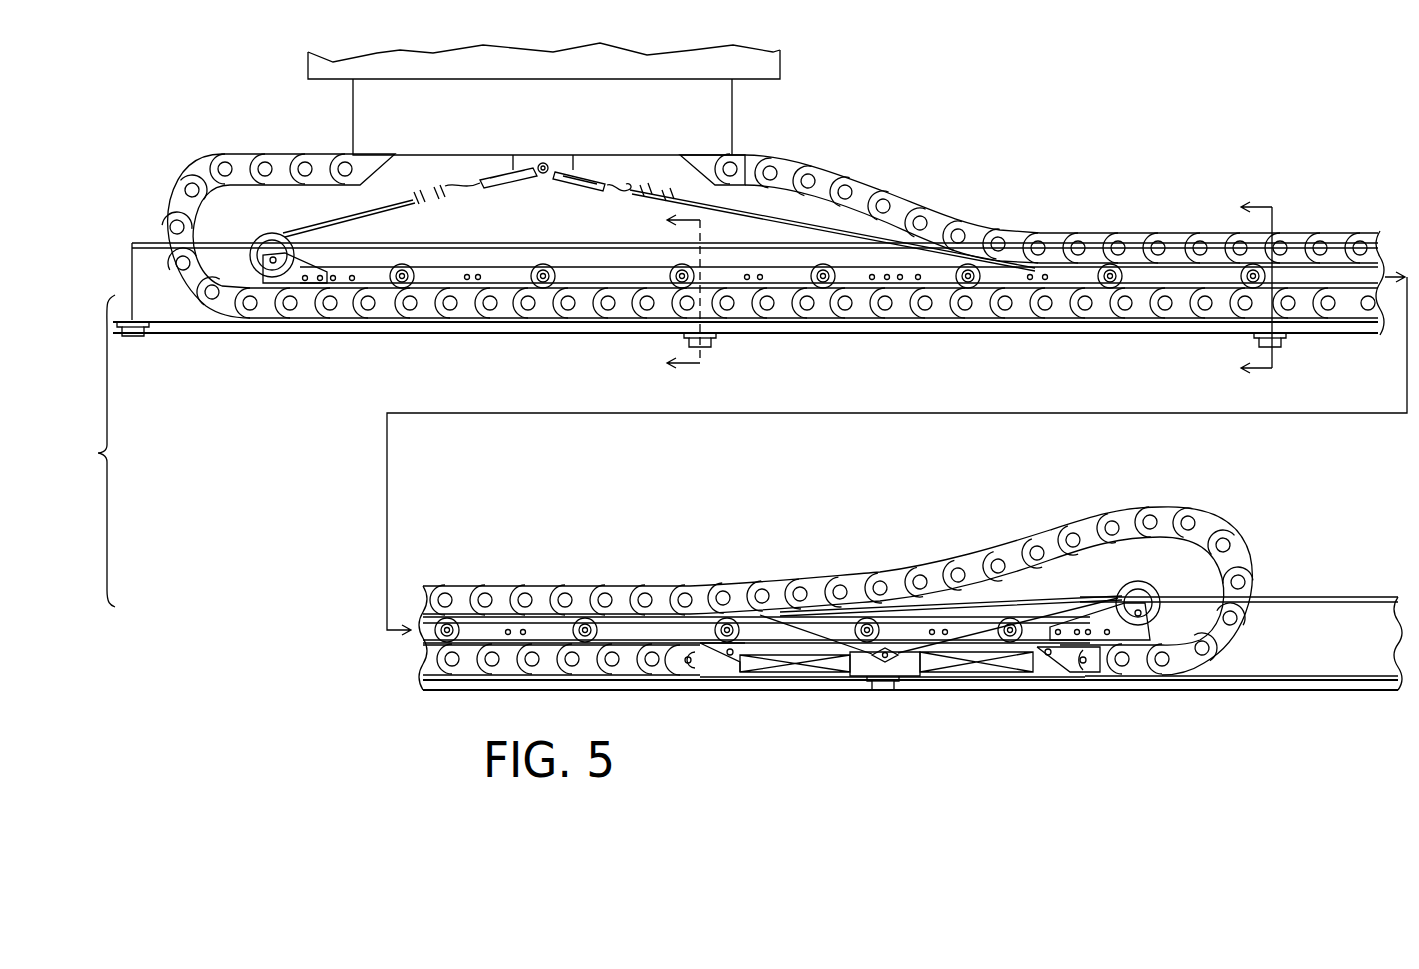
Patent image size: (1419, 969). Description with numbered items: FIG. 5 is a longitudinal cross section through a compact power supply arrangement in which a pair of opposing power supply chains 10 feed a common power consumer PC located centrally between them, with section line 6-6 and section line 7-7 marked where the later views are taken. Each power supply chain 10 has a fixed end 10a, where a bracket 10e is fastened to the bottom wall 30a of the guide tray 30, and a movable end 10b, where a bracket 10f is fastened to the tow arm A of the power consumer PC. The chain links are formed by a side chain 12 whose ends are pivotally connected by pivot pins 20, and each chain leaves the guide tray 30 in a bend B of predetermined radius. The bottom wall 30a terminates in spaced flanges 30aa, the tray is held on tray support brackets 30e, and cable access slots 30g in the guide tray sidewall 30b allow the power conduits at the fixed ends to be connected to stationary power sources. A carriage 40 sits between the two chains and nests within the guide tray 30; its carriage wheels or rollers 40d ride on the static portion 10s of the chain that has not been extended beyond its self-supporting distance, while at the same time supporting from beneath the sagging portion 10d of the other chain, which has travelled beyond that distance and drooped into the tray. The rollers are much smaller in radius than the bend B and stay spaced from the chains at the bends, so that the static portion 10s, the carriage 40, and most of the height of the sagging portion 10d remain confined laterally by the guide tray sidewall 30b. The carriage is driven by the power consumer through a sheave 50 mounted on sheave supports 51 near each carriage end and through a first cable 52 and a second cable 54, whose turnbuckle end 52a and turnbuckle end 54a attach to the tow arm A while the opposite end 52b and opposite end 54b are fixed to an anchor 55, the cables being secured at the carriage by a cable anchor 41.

The power consumer PC is at (765, 70).
The tow arm A is at (710, 98).
The movable end 10b is at (388, 147).
The bracket 10f is at (367, 165).
The turnbuckle end 52a is at (530, 168).
The first cable 52 is at (397, 212).
The turnbuckle end 54a is at (613, 182).
The bend B is at (163, 187).
The guide tray 30 is at (131, 254).
The guide tray sidewall 30b is at (190, 308).
The bottom wall 30a is at (978, 323).
The spaced flanges 30aa is at (1080, 327).
The tray support brackets 30e is at (132, 338).
The cable access slots 30g is at (818, 662).
The side chain 12 is at (337, 315).
The pivot pins 20 is at (290, 308).
The static portion 10s is at (410, 307).
The power supply chain 10 is at (986, 214).
The sagging portion 10d is at (1297, 230).
The bracket 10e is at (700, 658).
The fixed end 10a is at (728, 689).
The carriage 40 is at (579, 300).
The carriage wheels or rollers 40d is at (813, 290).
The cable anchor 41 is at (1046, 272).
The sheave 50 is at (268, 237).
The sheave supports 51 is at (1130, 627).
The second cable 54 is at (1092, 590).
The opposite end 54b is at (932, 655).
The opposite end 52b is at (782, 652).
The anchor 55 is at (887, 650).
The section line 6- 6 is at (1242, 287).
The section line 7- 7 is at (671, 291).